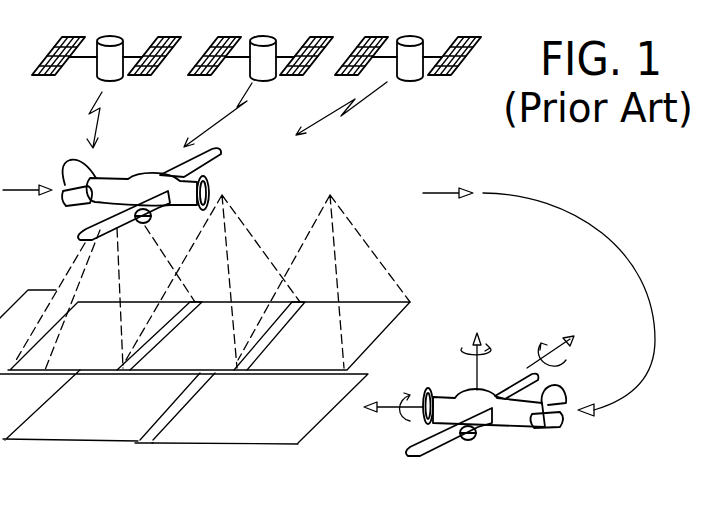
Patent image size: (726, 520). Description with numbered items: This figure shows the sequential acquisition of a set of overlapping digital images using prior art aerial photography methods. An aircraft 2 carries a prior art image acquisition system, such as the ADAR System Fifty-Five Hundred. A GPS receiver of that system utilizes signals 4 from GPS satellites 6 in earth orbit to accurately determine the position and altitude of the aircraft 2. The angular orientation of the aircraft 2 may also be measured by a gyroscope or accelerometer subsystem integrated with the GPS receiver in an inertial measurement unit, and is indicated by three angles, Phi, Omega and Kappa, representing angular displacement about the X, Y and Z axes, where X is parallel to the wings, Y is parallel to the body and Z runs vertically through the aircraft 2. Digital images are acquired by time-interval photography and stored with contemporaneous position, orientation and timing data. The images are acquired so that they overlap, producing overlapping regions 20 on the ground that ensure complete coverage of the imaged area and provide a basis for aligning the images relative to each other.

The aircraft 2 is at (118, 190).
The signals 4 is at (104, 101).
The GPS satellites 6 is at (96, 74).
The overlapping regions 20 is at (224, 294).